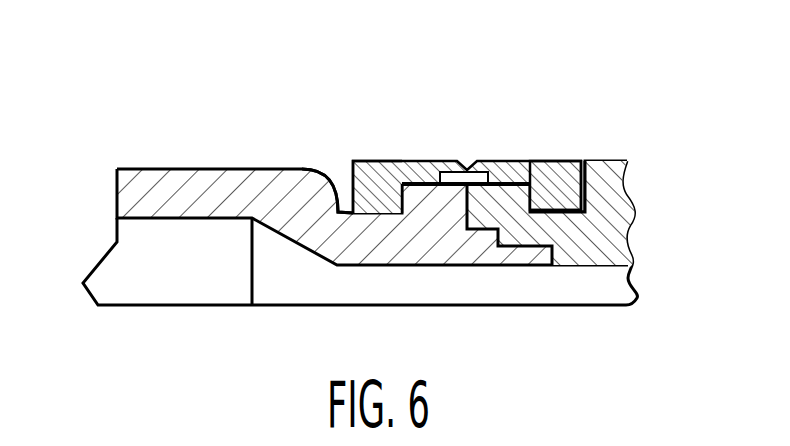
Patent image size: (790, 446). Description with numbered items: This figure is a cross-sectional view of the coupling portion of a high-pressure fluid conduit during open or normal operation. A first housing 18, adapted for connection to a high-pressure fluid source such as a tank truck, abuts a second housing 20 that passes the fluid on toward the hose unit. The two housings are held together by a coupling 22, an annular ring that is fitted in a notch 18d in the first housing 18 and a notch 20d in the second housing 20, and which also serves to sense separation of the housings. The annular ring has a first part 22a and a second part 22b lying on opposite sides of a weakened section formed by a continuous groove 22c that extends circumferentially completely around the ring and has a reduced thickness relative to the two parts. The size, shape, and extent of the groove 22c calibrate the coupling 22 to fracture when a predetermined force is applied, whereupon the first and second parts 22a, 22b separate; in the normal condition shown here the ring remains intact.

The first housing 18 is at (193, 169).
The notch in first housing 18d is at (340, 210).
The second housing 20 is at (608, 160).
The notch in second housing 20d is at (583, 160).
The coupling 22 is at (417, 162).
The first part of annular ring 22a is at (372, 158).
The second part of annular ring 22b is at (543, 160).
The groove 22c is at (467, 168).